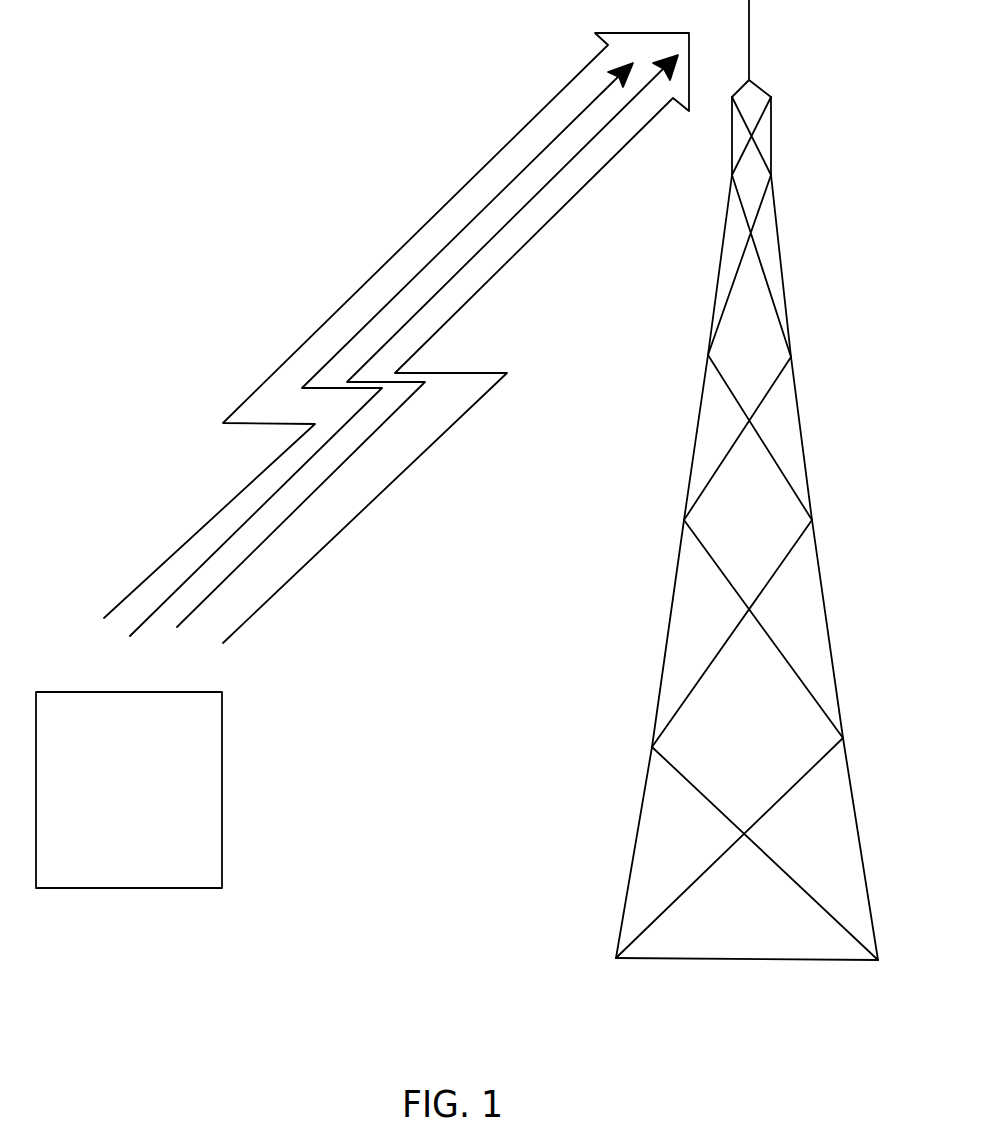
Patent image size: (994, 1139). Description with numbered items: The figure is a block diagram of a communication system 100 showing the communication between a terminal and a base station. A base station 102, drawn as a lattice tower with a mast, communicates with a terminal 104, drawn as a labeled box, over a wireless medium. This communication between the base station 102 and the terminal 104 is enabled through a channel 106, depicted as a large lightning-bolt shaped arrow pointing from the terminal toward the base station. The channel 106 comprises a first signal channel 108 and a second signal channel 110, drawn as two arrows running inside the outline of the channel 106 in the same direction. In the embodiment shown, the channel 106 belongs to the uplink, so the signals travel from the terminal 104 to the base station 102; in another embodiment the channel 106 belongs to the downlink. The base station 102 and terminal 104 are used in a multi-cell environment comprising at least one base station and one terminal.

The communication system 100 is at (290, 925).
The base station 102 is at (685, 522).
The terminal 104 is at (130, 690).
The channel 106 is at (393, 253).
The first signal channel 108 is at (310, 375).
The second signal channel 110 is at (392, 417).